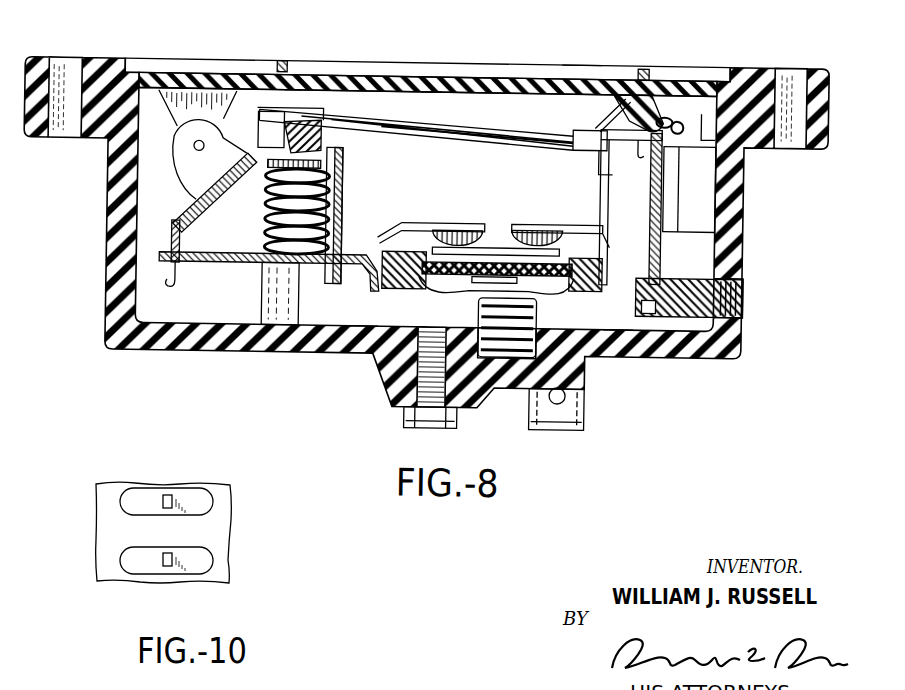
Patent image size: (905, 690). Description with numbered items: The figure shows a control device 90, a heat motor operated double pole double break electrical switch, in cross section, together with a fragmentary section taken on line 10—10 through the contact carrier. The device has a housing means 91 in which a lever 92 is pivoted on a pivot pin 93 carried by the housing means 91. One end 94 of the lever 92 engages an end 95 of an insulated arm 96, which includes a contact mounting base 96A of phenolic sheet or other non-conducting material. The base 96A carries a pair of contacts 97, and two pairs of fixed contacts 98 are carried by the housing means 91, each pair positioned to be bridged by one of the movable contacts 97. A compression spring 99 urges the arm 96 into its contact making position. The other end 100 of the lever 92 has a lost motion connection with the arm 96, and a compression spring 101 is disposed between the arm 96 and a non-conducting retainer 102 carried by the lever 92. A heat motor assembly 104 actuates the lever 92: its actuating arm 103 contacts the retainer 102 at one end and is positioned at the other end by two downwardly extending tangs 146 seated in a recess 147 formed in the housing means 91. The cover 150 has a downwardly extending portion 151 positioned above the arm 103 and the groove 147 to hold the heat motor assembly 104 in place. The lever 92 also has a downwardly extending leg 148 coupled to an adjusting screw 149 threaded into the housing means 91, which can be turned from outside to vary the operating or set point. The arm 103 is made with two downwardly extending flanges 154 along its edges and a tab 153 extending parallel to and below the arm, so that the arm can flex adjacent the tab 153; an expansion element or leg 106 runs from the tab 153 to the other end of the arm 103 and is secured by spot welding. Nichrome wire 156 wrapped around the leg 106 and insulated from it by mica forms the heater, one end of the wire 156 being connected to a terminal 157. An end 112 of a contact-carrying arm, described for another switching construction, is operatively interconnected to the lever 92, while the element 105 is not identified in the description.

In FIG. 8, the section line 10 is at (362, 286).
In FIG. 8, the control device 90 is at (568, 52).
In FIG. 8, the housing means 91 is at (742, 66).
In FIG. 8, the lever 92 is at (210, 204).
In FIG. 8, the pivot pin 93 is at (204, 149).
In FIG. 8, the end of lever 94 is at (175, 285).
In FIG. 8, the end of insulated arm 95 is at (190, 268).
In FIG. 10, the end of insulated arm 95 is at (208, 537).
In FIG. 8, the insulated arm 96 is at (380, 292).
In FIG. 8, the contact mounting base 96A is at (470, 296).
In FIG. 8, the contacts 97 is at (486, 247).
In FIG. 10, the contacts 97 is at (194, 502).
In FIG. 8, the fixed contacts 98 is at (470, 212).
In FIG. 8, the compression spring 99 is at (514, 323).
In FIG. 8, the other end of lever 100 is at (338, 226).
In FIG. 8, the compression spring 101 is at (324, 195).
In FIG. 8, the retainer 102 is at (326, 150).
In FIG. 8, the actuating arm 103 is at (306, 109).
In FIG. 8, the heat motor assembly 104 is at (428, 113).
In FIG. 8, the cover screw 105 is at (287, 109).
In FIG. 8, the expansion element leg 106 is at (482, 135).
In FIG. 8, the arm end 112 is at (173, 248).
In FIG. 8, the tangs 146 is at (636, 150).
In FIG. 8, the recess 147 is at (645, 183).
In FIG. 8, the downwardly extending leg 148 is at (662, 182).
In FIG. 8, the adjusting screw 149 is at (744, 282).
In FIG. 8, the cover 150 is at (578, 80).
In FIG. 8, the downwardly extending portion 151 is at (652, 82).
In FIG. 8, the tab 153 is at (601, 170).
In FIG. 8, the flanges 154 is at (407, 148).
In FIG. 8, the nichrome wire 156 is at (610, 115).
In FIG. 8, the terminal 157 is at (697, 109).